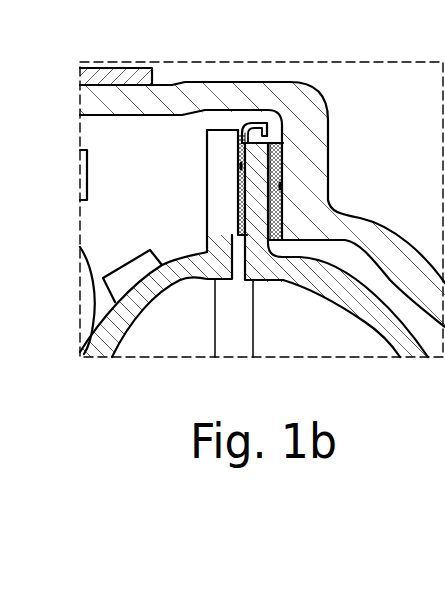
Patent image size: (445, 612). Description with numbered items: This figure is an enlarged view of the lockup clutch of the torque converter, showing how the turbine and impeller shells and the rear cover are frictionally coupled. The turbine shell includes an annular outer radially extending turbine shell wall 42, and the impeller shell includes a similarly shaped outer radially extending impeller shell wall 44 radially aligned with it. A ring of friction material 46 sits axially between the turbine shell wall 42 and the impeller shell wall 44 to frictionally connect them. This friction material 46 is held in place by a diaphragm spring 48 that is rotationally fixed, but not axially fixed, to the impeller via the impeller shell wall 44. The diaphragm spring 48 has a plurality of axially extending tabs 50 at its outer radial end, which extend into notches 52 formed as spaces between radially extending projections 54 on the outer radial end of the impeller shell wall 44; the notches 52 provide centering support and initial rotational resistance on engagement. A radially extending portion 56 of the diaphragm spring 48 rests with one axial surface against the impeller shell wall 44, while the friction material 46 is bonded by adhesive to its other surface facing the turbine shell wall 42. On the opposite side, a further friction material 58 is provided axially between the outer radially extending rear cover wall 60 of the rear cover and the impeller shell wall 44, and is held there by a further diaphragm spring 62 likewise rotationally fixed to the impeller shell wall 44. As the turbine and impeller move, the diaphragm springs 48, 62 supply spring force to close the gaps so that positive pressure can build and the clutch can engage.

The outer radially extending turbine shell wall 42 is at (218, 210).
The outer radially extending impeller shell wall 44 is at (257, 252).
The friction material 46 is at (233, 222).
The diaphragm spring 48 is at (243, 160).
The axially extending tabs 50 is at (242, 130).
The notches 52 is at (240, 136).
The radially extending projections 54 is at (250, 137).
The radially extending portion 56 is at (238, 172).
The further friction material 58 is at (300, 163).
The outer radially extending rear cover wall 60 is at (307, 180).
The further diaphragm spring 62 is at (281, 147).